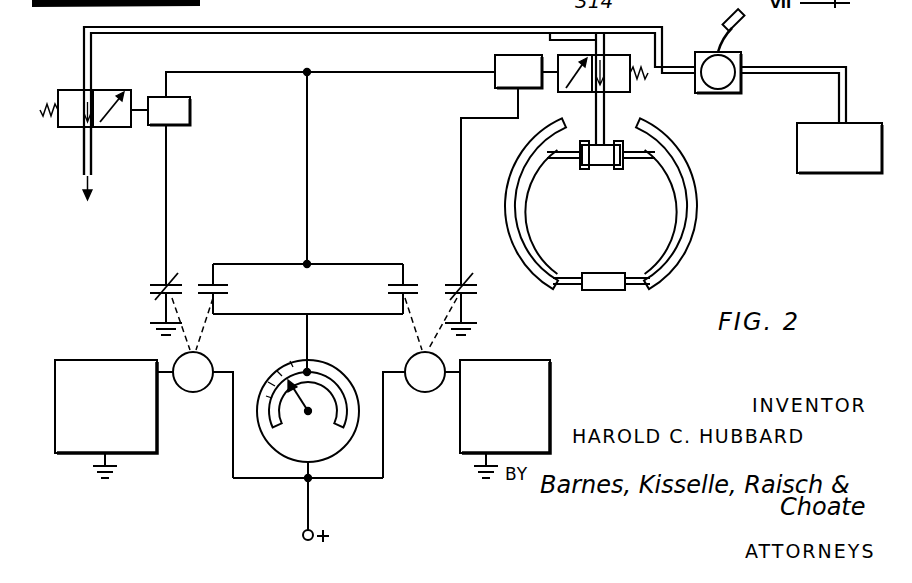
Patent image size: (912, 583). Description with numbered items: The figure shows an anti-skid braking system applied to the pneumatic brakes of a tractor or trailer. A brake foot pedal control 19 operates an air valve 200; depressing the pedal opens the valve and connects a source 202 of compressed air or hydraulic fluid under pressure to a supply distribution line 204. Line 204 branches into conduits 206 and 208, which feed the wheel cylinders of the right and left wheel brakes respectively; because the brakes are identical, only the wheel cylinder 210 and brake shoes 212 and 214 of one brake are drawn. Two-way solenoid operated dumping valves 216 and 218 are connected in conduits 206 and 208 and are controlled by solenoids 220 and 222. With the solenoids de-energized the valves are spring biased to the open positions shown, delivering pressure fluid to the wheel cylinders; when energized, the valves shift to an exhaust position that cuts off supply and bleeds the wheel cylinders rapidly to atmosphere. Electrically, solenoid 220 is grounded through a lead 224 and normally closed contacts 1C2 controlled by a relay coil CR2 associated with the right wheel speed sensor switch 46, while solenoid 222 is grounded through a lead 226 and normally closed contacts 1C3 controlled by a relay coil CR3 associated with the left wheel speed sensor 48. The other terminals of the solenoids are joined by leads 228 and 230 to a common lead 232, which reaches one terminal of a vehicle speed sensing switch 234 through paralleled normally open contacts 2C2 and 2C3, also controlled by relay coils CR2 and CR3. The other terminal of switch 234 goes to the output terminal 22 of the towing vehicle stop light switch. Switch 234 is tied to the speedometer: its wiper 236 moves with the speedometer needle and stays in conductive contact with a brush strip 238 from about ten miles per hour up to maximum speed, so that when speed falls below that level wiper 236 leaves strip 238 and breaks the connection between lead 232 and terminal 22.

The supply distribution line 204 is at (345, 33).
The branch conduit 208 is at (92, 156).
The two-way solenoid operated dumping valve 218 is at (98, 90).
The solenoid 222 is at (191, 110).
The lead 230 is at (278, 73).
The lead 228 is at (364, 73).
The common lead 232 is at (308, 174).
The lead 224 is at (460, 166).
The lead 226 is at (167, 197).
The solenoid 220 is at (493, 87).
The two-way solenoid operated dumping valve 216 is at (630, 89).
The branch conduit 206 is at (605, 108).
The wheel cylinder 210 is at (600, 169).
The brake shoe 212 is at (526, 221).
The brake shoe 214 is at (676, 208).
The air valve 200 is at (712, 94).
The brake foot pedal control 19 is at (714, 34).
The source of compressed air 202 is at (796, 150).
The normally closed contacts 1C3 is at (150, 285).
The normally open contacts 2C3 is at (228, 288).
The normally open contacts 2C2 is at (388, 286).
The normally closed contacts 1C2 is at (458, 276).
The relay coil CR3 is at (195, 415).
The relay coil CR2 is at (421, 415).
The vehicle speed sensing switch 234 is at (356, 388).
The brush strip 238 is at (316, 368).
The wiper 236 is at (291, 407).
The output terminal 22 is at (300, 530).
The left wheel speed sensor 48 is at (158, 452).
The right wheel speed sensor switch 46 is at (459, 440).